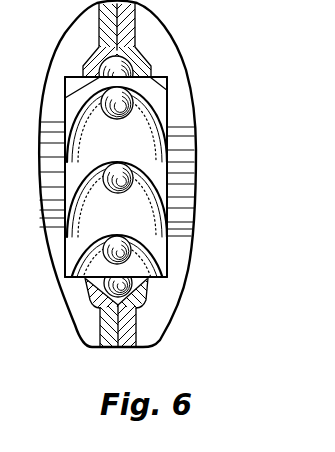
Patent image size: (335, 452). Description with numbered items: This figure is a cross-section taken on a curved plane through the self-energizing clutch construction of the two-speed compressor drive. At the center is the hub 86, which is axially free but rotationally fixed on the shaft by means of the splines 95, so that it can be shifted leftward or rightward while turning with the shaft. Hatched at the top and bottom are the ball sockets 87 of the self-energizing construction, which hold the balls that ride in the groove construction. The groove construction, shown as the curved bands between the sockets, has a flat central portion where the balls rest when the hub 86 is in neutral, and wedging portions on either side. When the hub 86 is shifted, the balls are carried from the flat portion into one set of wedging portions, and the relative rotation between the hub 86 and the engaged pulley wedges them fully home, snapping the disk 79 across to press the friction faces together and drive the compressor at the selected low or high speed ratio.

The disk 79 is at (134, 328).
The hub 86 is at (170, 245).
The ball sockets 87 is at (147, 62).
The splines 95 is at (192, 174).